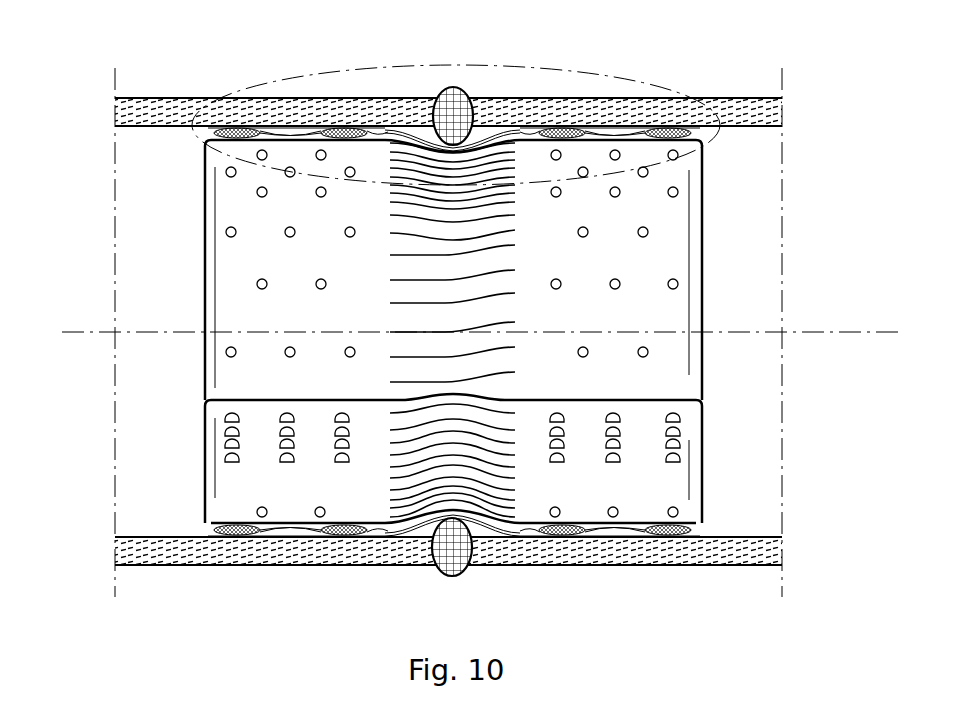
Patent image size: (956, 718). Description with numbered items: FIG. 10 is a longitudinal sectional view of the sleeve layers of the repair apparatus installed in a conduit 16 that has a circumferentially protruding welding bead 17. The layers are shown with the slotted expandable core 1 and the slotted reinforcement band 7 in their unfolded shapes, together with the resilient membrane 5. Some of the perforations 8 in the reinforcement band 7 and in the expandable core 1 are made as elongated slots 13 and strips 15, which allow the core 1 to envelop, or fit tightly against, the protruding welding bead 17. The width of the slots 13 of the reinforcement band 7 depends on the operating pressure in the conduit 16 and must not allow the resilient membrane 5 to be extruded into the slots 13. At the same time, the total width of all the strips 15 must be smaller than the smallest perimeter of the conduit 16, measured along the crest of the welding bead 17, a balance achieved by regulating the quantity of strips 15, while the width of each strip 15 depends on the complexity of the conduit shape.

The expandable core 1 is at (697, 307).
The resilient membrane 5 is at (300, 137).
The reinforcement band 7 is at (503, 512).
The perforations 8 is at (677, 281).
The elongated slots 13 is at (413, 440).
The strips 15 is at (445, 413).
The conduit 16 is at (740, 102).
The welding bead 17 is at (458, 562).